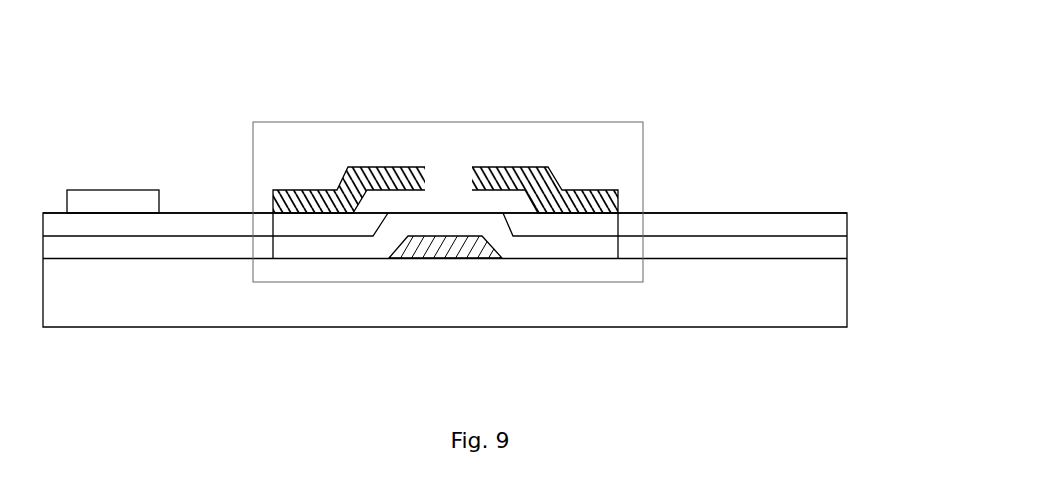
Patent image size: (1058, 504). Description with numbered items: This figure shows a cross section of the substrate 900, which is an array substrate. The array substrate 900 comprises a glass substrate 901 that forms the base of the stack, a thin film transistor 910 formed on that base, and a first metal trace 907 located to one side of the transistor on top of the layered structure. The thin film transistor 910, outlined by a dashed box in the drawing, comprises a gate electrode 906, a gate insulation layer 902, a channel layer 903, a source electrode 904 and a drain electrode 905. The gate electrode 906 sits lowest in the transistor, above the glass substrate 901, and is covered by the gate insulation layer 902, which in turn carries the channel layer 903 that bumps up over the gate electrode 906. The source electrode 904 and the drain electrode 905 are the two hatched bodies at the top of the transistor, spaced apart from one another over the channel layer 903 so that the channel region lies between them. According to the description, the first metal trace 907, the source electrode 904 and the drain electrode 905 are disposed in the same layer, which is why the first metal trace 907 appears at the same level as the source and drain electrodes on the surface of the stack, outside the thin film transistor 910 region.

The substrate 900 is at (825, 86).
The glass substrate 901 is at (800, 295).
The gate insulation layer 902 is at (838, 252).
The channel layer 903 is at (805, 223).
The source electrode 904 is at (340, 185).
The drain electrode 905 is at (505, 168).
The gate electrode 906 is at (448, 257).
The first metal trace 907 is at (112, 190).
The thin film transistor 910 is at (554, 283).